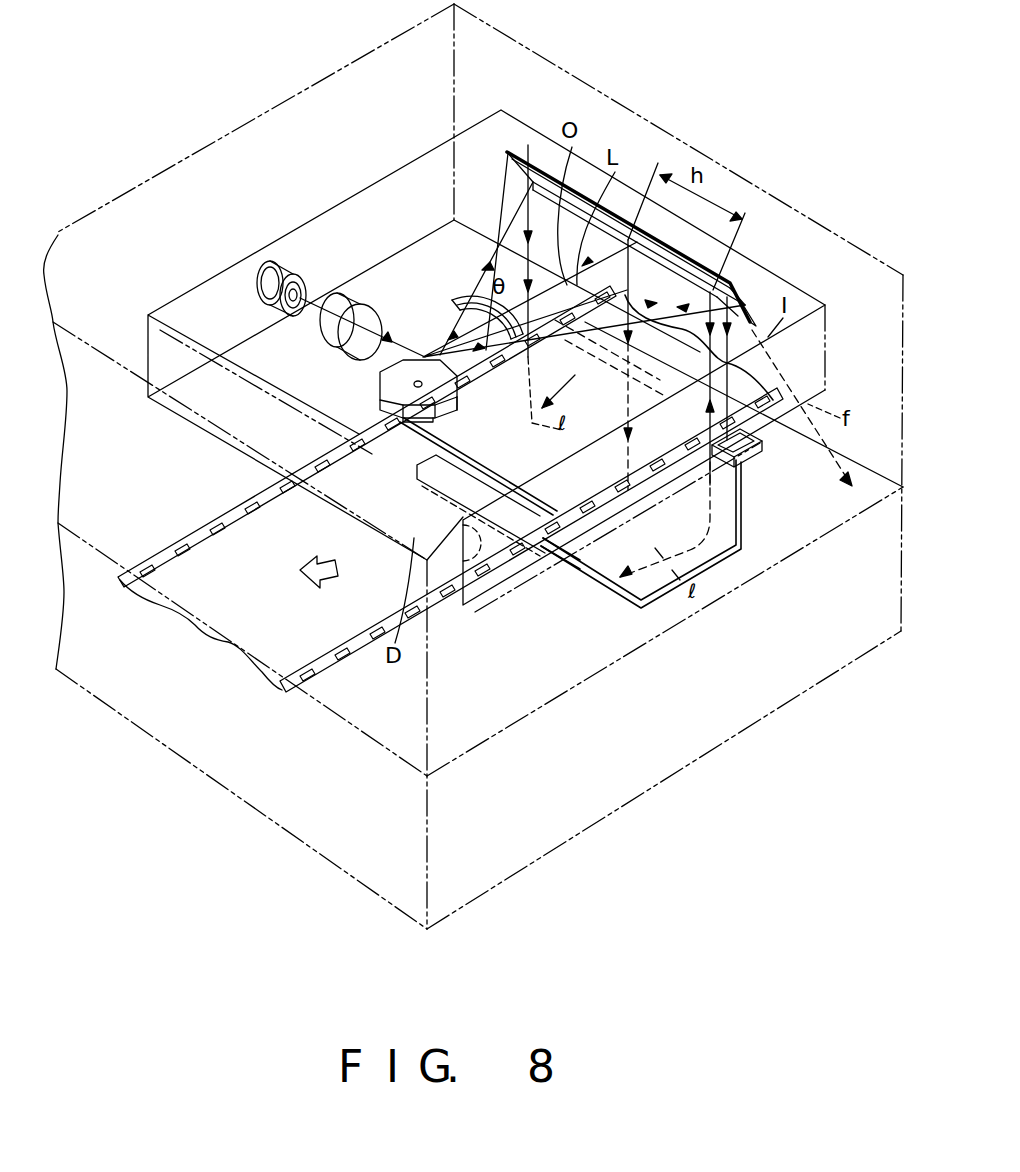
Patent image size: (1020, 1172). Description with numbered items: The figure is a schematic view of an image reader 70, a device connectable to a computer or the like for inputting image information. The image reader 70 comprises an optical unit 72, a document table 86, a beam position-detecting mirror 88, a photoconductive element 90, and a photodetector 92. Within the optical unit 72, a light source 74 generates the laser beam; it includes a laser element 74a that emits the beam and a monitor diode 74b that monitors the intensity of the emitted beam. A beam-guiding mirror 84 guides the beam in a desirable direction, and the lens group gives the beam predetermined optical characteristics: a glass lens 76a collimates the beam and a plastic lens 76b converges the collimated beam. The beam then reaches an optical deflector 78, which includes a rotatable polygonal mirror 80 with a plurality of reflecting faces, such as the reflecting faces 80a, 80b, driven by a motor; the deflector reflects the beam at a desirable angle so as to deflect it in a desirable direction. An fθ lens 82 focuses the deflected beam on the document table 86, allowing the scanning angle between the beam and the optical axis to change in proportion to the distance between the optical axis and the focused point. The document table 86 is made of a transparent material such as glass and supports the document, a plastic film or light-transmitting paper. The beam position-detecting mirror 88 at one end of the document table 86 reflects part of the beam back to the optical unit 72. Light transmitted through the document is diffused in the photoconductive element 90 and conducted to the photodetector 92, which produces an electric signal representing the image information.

The image reader 70 is at (725, 190).
The optical unit 72 is at (745, 263).
The light source 74 is at (270, 294).
The laser element 74a is at (290, 315).
The monitor diode 74b is at (260, 298).
The glass lens 76a is at (338, 292).
The plastic lens 76b is at (348, 352).
The optical deflector 78 is at (410, 348).
The polygonal mirror 80 is at (380, 393).
The reflecting face 80a is at (457, 405).
The reflecting face 80b is at (456, 410).
The fθ lens 82 is at (470, 296).
The beam-guiding mirror 84 is at (750, 300).
The document table 86 is at (752, 438).
The beam position-detecting mirror 88 is at (745, 462).
The photoconductive element 90 is at (603, 570).
The photodetector 92 is at (528, 566).